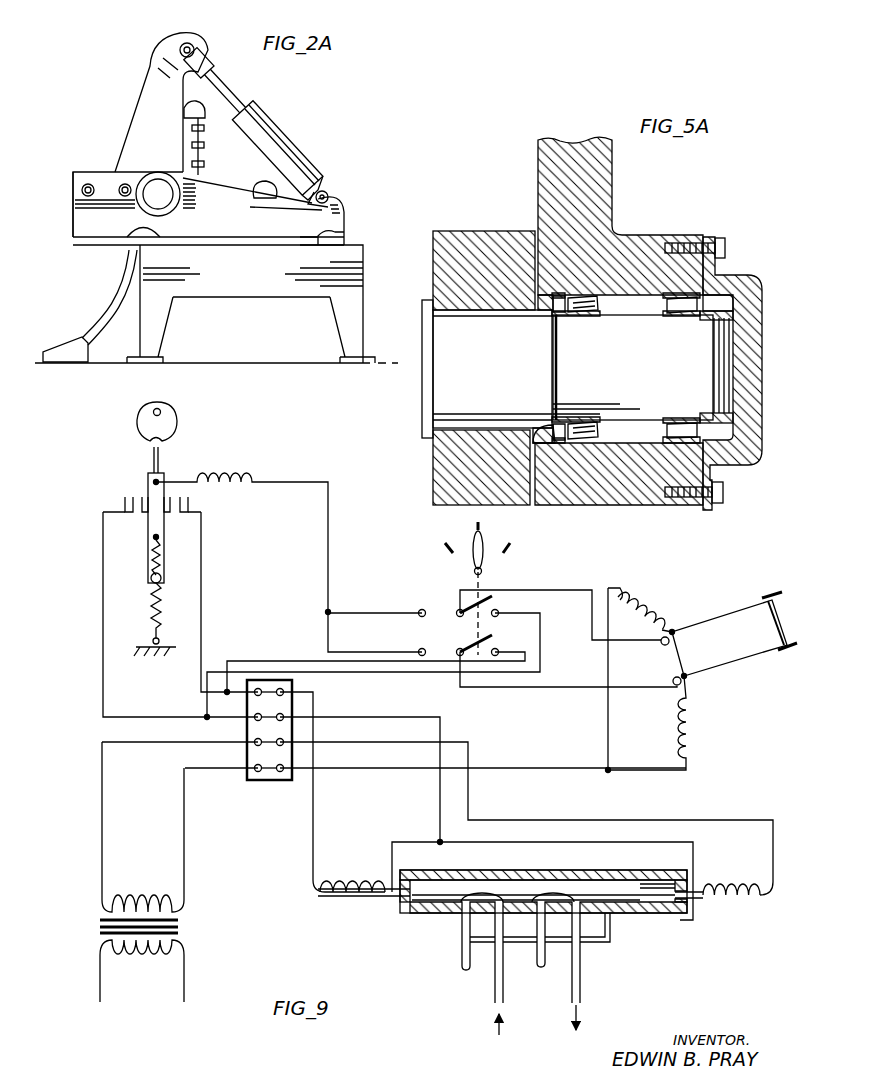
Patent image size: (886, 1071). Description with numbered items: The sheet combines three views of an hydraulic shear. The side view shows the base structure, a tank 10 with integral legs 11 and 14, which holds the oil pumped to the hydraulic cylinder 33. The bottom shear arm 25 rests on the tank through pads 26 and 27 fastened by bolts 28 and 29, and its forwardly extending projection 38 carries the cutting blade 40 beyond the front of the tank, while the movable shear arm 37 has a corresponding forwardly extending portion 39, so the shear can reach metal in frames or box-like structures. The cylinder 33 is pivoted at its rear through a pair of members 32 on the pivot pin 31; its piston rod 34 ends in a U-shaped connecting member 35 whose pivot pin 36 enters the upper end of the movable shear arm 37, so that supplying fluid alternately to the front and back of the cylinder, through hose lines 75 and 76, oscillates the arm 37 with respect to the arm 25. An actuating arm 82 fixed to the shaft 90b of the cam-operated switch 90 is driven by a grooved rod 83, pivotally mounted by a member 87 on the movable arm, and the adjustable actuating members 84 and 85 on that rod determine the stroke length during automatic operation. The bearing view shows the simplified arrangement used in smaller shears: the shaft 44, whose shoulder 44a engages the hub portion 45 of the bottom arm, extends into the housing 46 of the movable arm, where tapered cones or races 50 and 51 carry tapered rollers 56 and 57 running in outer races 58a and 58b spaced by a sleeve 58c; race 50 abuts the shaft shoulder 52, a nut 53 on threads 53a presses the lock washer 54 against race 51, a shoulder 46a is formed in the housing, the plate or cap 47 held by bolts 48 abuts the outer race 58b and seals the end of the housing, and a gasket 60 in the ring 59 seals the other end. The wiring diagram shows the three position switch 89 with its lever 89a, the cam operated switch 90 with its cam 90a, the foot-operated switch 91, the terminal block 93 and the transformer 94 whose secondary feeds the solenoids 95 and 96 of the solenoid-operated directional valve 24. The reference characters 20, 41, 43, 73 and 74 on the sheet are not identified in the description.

In FIG. 2A, the tank 10 is at (365, 263).
In FIG. 2A, the leg 11 is at (352, 333).
In FIG. 2A, the leg 14 is at (163, 327).
In FIG. 2A, the lever 20 is at (258, 184).
In FIG. 9, the solenoid-operated directional valve 24 is at (535, 866).
In FIG. 2A, the bottom shear arm 25 is at (350, 215).
In FIG. 2A, the pad 26 is at (318, 243).
In FIG. 2A, the pad 27 is at (158, 240).
In FIG. 2A, the bolt 28 is at (342, 236).
In FIG. 2A, the bolt 29 is at (130, 242).
In FIG. 2A, the pivot pin 31 is at (335, 199).
In FIG. 2A, the member 32 is at (325, 188).
In FIG. 2A, the hydraulic cylinder 33 is at (282, 130).
In FIG. 2A, the piston rod 34 is at (228, 98).
In FIG. 2A, the U-shaped connecting member 35 is at (208, 58).
In FIG. 2A, the pivot pin 36 is at (195, 44).
In FIG. 2A, the movable shear arm 37 is at (150, 100).
In FIG. 5A, the movable shear arm 37 is at (600, 157).
In FIG. 2A, the forwardly extending projection 38 is at (82, 238).
In FIG. 2A, the forwardly extending portion 39 is at (73, 182).
In FIG. 2A, the cutting blade 40 is at (75, 204).
In FIG. 2A, the rail 41 is at (126, 211).
In FIG. 2A, the bolts 43 is at (125, 183).
In FIG. 5A, the shaft 44 is at (508, 365).
In FIG. 5A, the shoulder 44a is at (424, 408).
In FIG. 5A, the hub portion 45 is at (460, 231).
In FIG. 5A, the housing 46 is at (622, 492).
In FIG. 5A, the shoulder 46a is at (552, 482).
In FIG. 2A, the plate 47 is at (182, 200).
In FIG. 5A, the plate 47 is at (764, 420).
In FIG. 5A, the bolt 48 is at (726, 243).
In FIG. 5A, the bearing race 50 is at (559, 312).
In FIG. 5A, the bearing race 51 is at (690, 314).
In FIG. 5A, the shoulder 52 is at (557, 360).
In FIG. 5A, the nut 53 is at (735, 316).
In FIG. 5A, the threads 53a is at (722, 360).
In FIG. 5A, the lock washer 54 is at (718, 312).
In FIG. 5A, the tapered rollers 56 is at (590, 314).
In FIG. 5A, the rollers 57 is at (668, 428).
In FIG. 5A, the outer race 58a is at (600, 312).
In FIG. 5A, the outer race 58b is at (607, 327).
In FIG. 5A, the sleeve 58c is at (618, 420).
In FIG. 5A, the ring 59 is at (545, 427).
In FIG. 5A, the gasket 60 is at (544, 302).
In FIG. 9, the return port 73 is at (580, 965).
In FIG. 9, the inlet port 74 is at (495, 984).
In FIG. 9, the hydraulic hose line 75 is at (462, 950).
In FIG. 9, the hydraulic hose line 76 is at (540, 952).
In FIG. 2A, the actuating arm 82 is at (195, 152).
In FIG. 2A, the grooved rod 83 is at (204, 128).
In FIG. 2A, the actuating member 84 is at (204, 164).
In FIG. 2A, the actuating member 85 is at (204, 145).
In FIG. 2A, the member 87 is at (186, 112).
In FIG. 9, the three position switch 89 is at (438, 605).
In FIG. 9, the lever 89a is at (483, 571).
In FIG. 9, the cam operated toggle switch 90 is at (146, 530).
In FIG. 9, the cam 90a is at (178, 426).
In FIG. 9, the shaft 90b is at (162, 410).
In FIG. 2A, the foot-operated switch 91 is at (62, 340).
In FIG. 9, the foot-operated switch 91 is at (720, 627).
In FIG. 9, the terminal block 93 is at (267, 782).
In FIG. 9, the transformer 94 is at (180, 923).
In FIG. 9, the solenoid 95 is at (337, 902).
In FIG. 9, the solenoid 96 is at (732, 908).